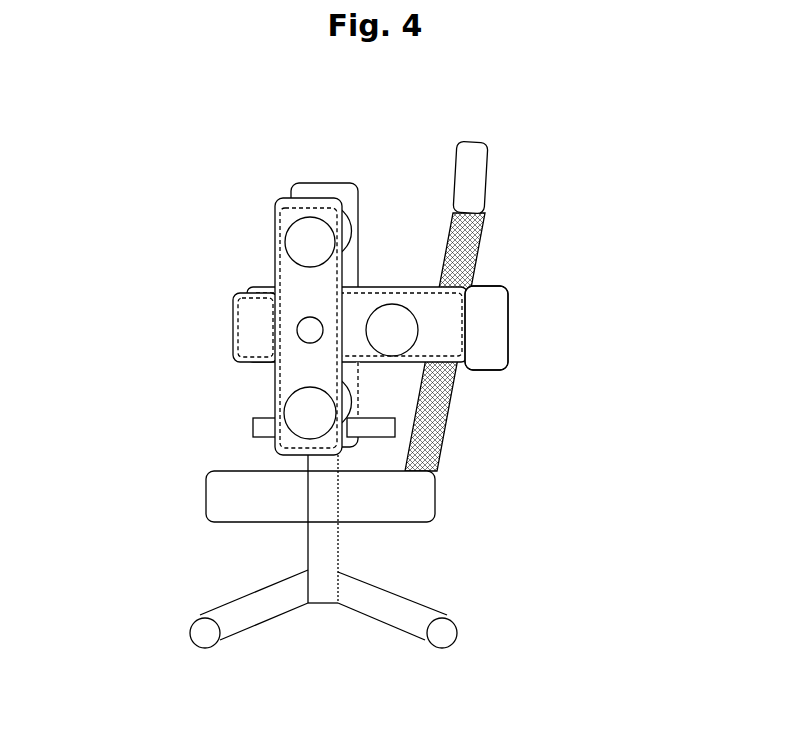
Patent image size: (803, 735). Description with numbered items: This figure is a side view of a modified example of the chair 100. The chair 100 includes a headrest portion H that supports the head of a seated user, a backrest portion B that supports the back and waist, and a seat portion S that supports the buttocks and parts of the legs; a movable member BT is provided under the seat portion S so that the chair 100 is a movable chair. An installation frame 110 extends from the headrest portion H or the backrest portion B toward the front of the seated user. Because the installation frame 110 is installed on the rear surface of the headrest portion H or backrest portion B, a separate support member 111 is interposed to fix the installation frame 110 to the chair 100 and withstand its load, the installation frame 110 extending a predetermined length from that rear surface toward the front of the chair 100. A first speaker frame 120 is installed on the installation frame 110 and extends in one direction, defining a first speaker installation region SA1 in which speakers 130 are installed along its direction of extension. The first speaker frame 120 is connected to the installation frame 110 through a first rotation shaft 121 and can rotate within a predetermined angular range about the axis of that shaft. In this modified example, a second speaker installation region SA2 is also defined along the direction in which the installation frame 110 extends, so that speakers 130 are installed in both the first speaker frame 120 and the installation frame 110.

The chair 100 is at (631, 103).
The headrest portion H is at (480, 170).
The backrest portion B is at (452, 400).
The seat portion S is at (423, 502).
The movable member BT is at (315, 548).
The installation frame 110 is at (237, 320).
The support member 111 is at (497, 348).
The first speaker frame 120 is at (287, 457).
The first rotation shaft 121 is at (299, 328).
The speaker 130 is at (297, 238).
The first speaker installation region SA1 is at (282, 385).
The second speaker installation region SA2 is at (453, 310).